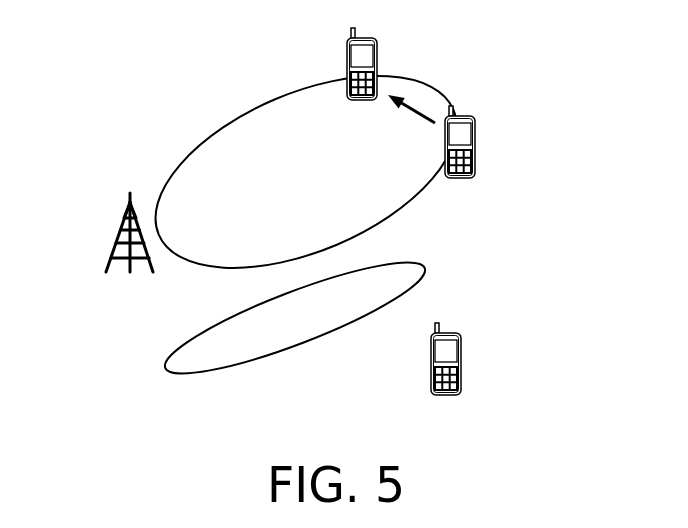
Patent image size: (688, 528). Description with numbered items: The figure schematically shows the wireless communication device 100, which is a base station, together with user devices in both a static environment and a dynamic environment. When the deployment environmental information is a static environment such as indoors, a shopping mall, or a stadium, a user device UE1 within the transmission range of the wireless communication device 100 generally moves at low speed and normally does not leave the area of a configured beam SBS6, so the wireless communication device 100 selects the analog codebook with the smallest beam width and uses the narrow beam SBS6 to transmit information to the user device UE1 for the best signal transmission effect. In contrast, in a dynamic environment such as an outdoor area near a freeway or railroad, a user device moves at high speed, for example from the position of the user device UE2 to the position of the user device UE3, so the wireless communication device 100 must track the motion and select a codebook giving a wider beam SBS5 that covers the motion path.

The wireless communication device 100 is at (121, 217).
The beam SBS5 is at (250, 110).
The beam SBS6 is at (273, 338).
The user device UE1 is at (462, 352).
The user device UE2 is at (476, 128).
The user device UE3 is at (378, 50).